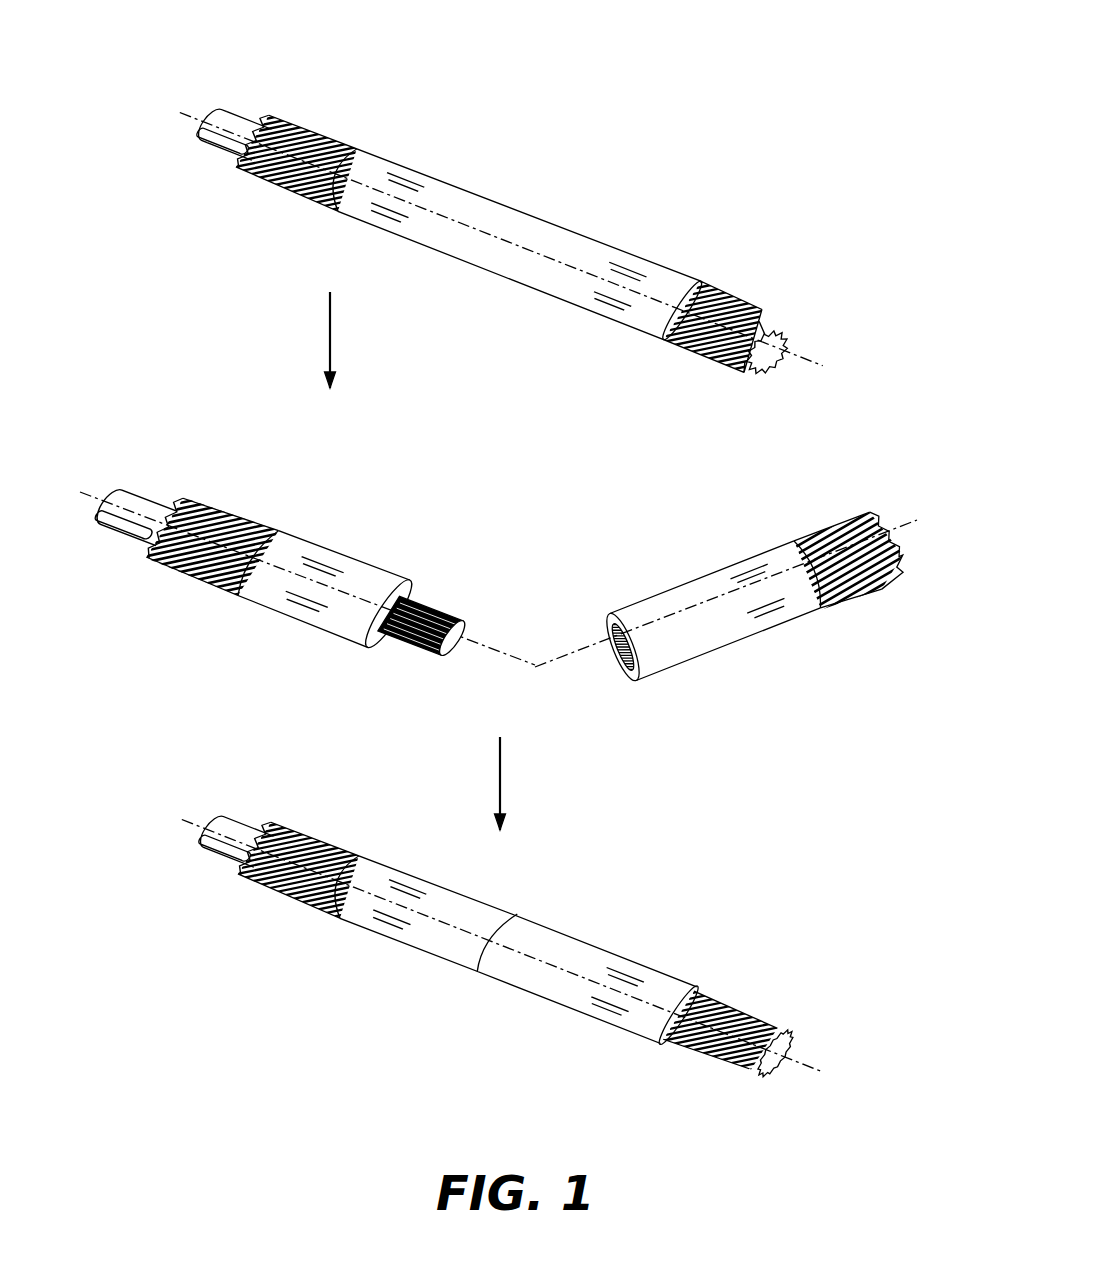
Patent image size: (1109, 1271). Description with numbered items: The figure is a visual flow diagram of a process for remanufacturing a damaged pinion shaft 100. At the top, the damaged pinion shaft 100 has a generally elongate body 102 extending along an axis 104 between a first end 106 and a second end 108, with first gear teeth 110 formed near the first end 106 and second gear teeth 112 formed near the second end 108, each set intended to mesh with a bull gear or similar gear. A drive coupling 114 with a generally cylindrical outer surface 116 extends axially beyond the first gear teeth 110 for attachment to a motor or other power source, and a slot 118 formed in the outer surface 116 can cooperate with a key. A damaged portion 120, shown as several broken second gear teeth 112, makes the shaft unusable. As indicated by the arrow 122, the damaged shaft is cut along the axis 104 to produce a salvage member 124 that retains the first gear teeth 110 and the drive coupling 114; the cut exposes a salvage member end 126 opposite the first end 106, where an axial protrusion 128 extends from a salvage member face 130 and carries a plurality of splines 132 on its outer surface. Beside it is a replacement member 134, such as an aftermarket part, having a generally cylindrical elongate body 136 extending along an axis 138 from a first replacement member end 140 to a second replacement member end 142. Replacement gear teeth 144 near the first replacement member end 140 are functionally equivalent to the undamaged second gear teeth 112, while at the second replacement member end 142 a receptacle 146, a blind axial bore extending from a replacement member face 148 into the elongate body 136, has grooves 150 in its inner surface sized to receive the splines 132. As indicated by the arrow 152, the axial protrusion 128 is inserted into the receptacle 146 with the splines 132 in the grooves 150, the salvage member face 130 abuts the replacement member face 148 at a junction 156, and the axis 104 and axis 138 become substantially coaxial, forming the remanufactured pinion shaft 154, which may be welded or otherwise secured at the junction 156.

The damaged pinion shaft 100 is at (680, 130).
The elongate body 102 is at (507, 215).
The axis 104 is at (192, 117).
The first end 106 is at (202, 72).
The second end 108 is at (822, 355).
The first gear teeth 110 is at (330, 148).
The second gear teeth 112 is at (735, 297).
The drive coupling 114 is at (215, 190).
The outer surface 116 is at (233, 128).
The slot 118 is at (215, 152).
The damaged portion 120 is at (765, 337).
The arrow 122 is at (332, 325).
The salvage member 124 is at (292, 495).
The salvage member end 126 is at (452, 575).
The axial protrusion 128 is at (452, 635).
The salvage member face 130 is at (390, 624).
The splines 132 is at (420, 647).
The replacement member 134 is at (800, 657).
The elongate body 136 is at (708, 585).
The axis 138 is at (917, 522).
The first replacement member end 140 is at (872, 480).
The second replacement member end 142 is at (652, 705).
The replacement gear teeth 144 is at (860, 597).
The receptacle 146 is at (620, 642).
The replacement member face 148 is at (607, 629).
The grooves 150 is at (622, 668).
The arrow 152 is at (503, 795).
The remanufactured pinion shaft 154 is at (300, 975).
The junction 156 is at (488, 982).